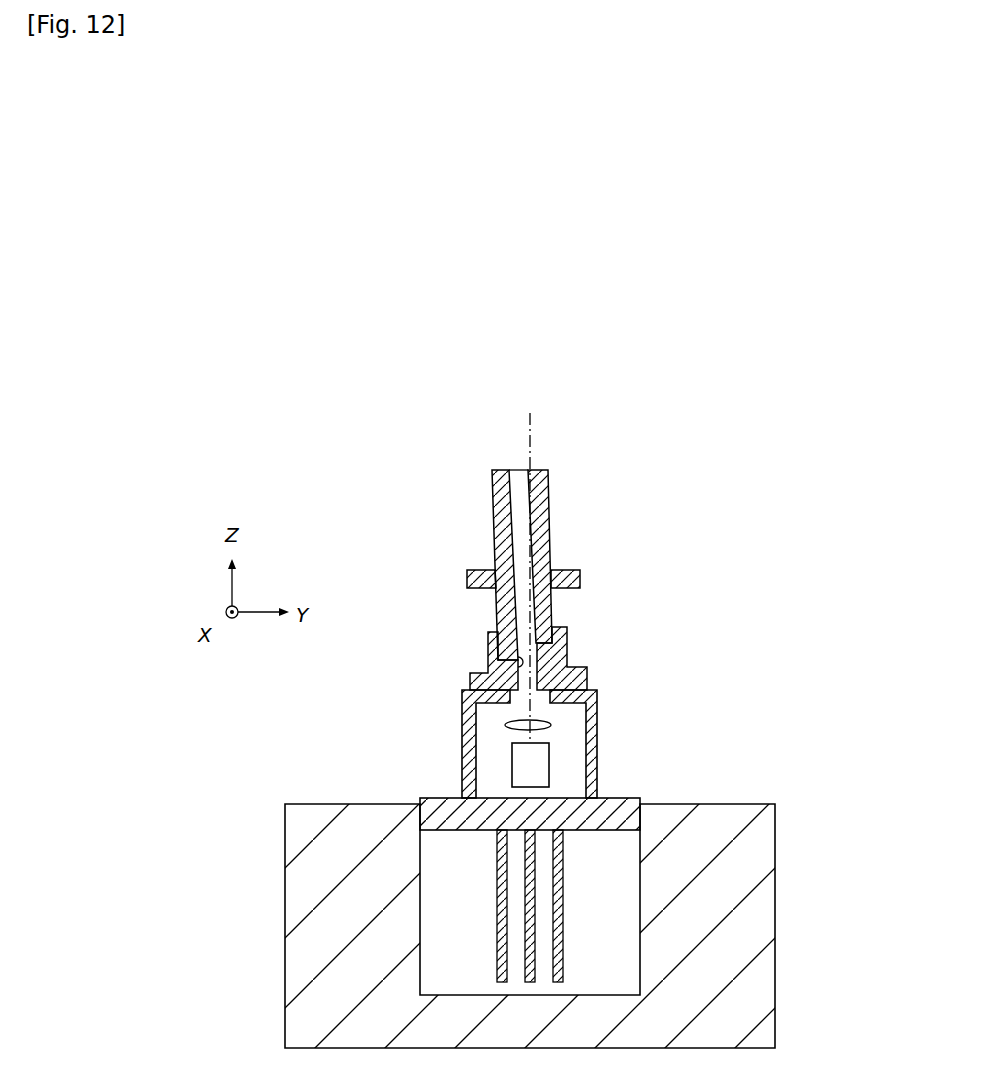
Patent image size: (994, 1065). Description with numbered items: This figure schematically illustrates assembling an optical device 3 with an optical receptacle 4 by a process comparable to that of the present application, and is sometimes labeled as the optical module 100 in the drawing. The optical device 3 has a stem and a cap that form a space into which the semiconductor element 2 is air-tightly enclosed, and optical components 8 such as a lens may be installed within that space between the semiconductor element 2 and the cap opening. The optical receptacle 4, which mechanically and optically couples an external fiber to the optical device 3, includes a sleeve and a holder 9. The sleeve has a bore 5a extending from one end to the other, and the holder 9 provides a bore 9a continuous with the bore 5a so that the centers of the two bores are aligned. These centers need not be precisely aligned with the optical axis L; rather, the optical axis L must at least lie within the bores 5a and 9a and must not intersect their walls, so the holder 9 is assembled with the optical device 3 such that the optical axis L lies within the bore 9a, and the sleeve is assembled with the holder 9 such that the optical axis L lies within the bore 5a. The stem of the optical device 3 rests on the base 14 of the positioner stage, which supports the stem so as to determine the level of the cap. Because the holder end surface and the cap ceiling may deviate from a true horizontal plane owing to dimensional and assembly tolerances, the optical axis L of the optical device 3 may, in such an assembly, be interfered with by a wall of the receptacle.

The optical module 100 is at (694, 476).
The base 14 is at (310, 804).
The optical device 3 is at (456, 737).
The optical components 8 is at (552, 725).
The semiconductor element 2 is at (549, 765).
The holder 9 is at (567, 645).
The bore 9a is at (514, 661).
The optical receptacle 4 is at (485, 492).
The bore 5a is at (512, 470).
The optical axis L is at (532, 440).